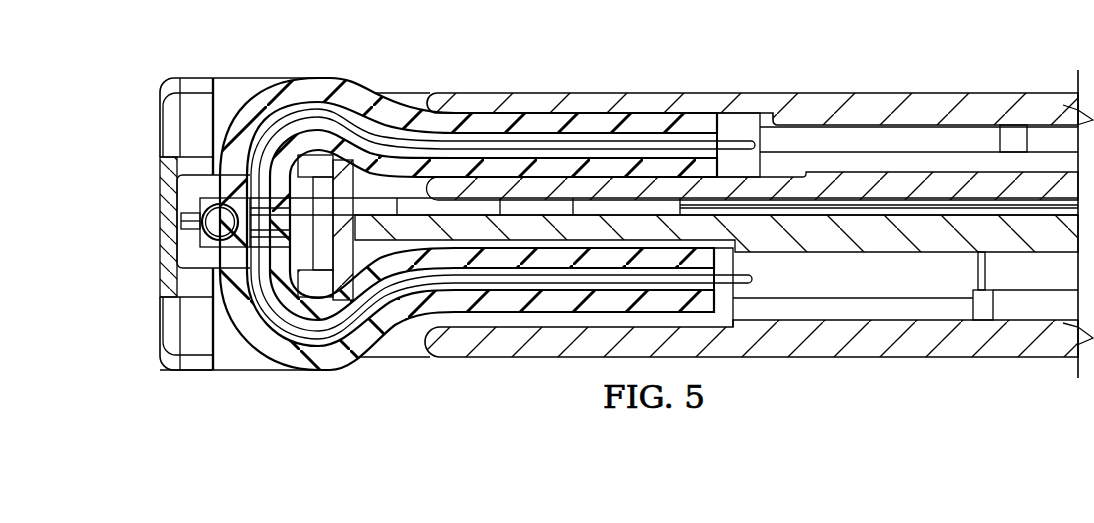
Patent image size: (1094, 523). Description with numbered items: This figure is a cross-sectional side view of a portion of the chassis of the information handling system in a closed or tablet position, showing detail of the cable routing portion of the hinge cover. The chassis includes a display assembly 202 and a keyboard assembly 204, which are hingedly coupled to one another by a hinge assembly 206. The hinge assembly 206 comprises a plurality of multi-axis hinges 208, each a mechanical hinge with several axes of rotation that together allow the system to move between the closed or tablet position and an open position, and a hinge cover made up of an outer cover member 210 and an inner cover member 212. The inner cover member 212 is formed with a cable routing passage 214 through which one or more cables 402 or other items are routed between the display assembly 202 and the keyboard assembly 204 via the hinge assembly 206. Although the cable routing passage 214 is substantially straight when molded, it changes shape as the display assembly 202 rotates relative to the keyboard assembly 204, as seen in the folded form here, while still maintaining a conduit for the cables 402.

The display assembly 202 is at (968, 103).
The keyboard assembly 204 is at (911, 346).
The hinge assembly 206 is at (165, 311).
The multi-axis hinge 208 is at (167, 204).
The outer cover member 210 is at (162, 121).
The inner cover member 212 is at (235, 78).
The cable routing passage 214 is at (397, 103).
The cable 402 is at (641, 138).